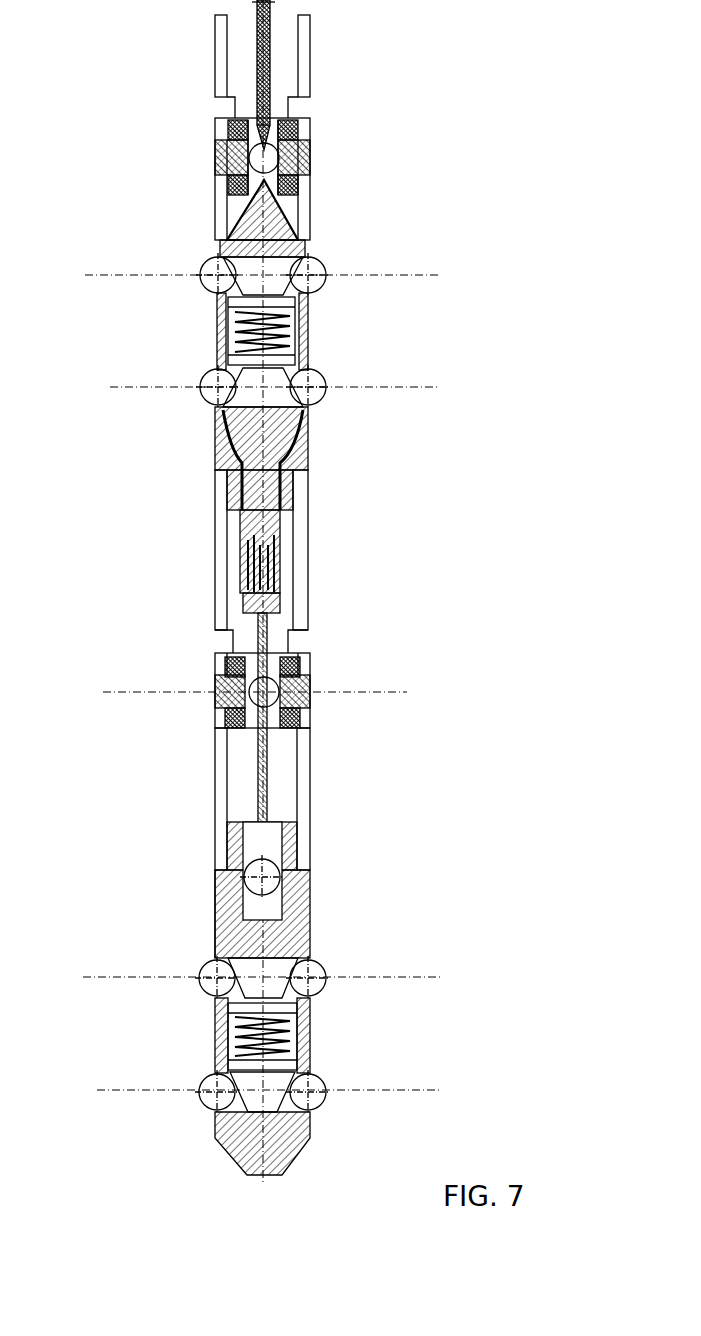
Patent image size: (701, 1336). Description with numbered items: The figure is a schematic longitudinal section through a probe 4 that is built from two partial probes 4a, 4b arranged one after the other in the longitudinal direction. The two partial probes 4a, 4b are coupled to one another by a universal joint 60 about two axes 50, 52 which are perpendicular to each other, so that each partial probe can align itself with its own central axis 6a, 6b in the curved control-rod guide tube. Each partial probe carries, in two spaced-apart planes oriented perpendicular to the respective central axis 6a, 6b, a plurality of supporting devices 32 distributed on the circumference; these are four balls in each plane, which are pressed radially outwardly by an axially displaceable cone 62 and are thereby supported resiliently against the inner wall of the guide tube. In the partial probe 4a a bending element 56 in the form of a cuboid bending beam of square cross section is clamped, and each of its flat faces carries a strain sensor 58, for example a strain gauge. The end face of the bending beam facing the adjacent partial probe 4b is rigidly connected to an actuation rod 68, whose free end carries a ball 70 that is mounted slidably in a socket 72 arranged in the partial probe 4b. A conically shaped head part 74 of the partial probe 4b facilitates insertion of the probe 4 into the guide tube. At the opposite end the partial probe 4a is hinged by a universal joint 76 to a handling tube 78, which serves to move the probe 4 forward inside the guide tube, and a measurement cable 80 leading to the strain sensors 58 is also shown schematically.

The measurement cable 80 is at (310, 25).
The handling tube 78 is at (303, 43).
The universal joint 76 is at (310, 145).
The probe 4 is at (666, 652).
The partial probe 4a is at (494, 625).
The partial probe 4b is at (522, 1153).
The supporting device 32 is at (320, 273).
The cone 62 is at (203, 370).
The central axis 6a is at (307, 430).
The strain sensor 58 is at (227, 570).
The bending element 56 is at (243, 605).
The actuation rod 68 is at (267, 632).
The axis 50 is at (400, 692).
The axis 52 is at (227, 720).
The universal joint 60 is at (303, 708).
The ball 70 is at (270, 872).
The socket 72 is at (312, 923).
The central axis 6b is at (215, 928).
The head part 74 is at (290, 1127).